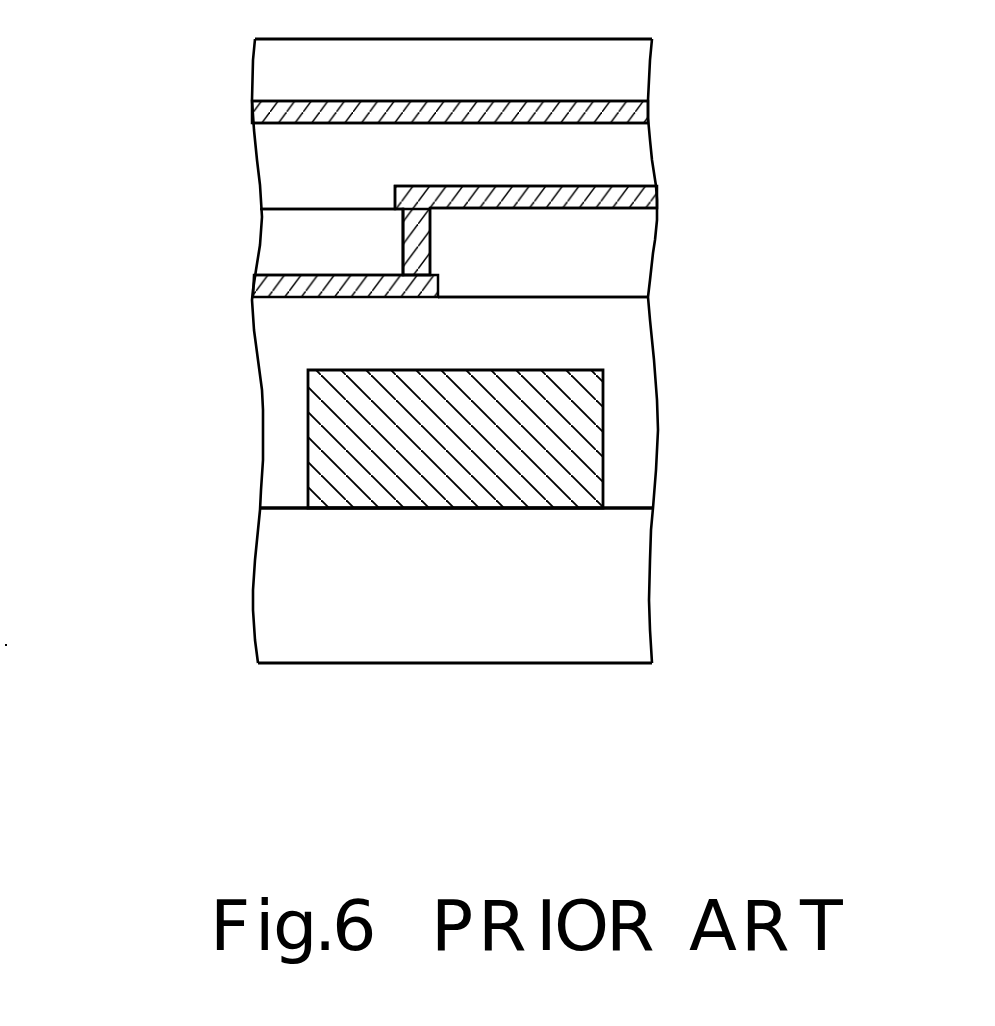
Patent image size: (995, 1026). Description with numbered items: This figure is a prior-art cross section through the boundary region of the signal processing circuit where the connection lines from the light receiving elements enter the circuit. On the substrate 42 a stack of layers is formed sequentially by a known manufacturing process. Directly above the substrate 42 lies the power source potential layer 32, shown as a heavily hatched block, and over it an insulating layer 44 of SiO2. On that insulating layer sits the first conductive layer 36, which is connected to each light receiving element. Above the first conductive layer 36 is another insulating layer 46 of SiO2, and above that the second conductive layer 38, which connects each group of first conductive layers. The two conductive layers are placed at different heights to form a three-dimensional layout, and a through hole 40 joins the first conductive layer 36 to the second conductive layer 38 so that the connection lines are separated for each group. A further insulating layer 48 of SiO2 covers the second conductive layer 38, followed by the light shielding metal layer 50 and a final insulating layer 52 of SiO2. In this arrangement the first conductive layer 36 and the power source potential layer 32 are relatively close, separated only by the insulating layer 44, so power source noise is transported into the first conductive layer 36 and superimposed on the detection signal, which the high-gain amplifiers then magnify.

The power source potential layer 32 is at (588, 409).
The first conductive layer 36 is at (268, 281).
The second conductive layer 38 is at (657, 200).
The through hole 40 is at (403, 240).
The substrate 42 is at (623, 540).
The insulating layer 44 is at (645, 353).
The insulating layer 46 is at (275, 224).
The insulating layer 48 is at (645, 159).
The light shielding metal layer 50 is at (643, 118).
The insulating layer 52 is at (642, 60).